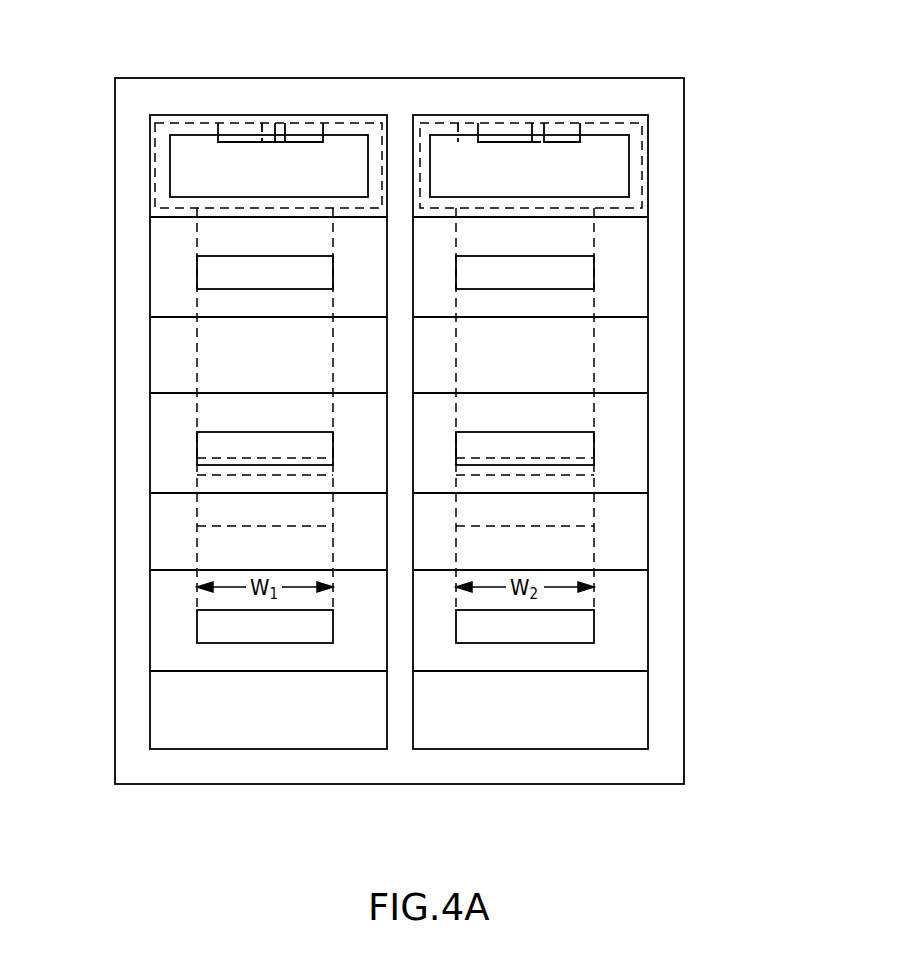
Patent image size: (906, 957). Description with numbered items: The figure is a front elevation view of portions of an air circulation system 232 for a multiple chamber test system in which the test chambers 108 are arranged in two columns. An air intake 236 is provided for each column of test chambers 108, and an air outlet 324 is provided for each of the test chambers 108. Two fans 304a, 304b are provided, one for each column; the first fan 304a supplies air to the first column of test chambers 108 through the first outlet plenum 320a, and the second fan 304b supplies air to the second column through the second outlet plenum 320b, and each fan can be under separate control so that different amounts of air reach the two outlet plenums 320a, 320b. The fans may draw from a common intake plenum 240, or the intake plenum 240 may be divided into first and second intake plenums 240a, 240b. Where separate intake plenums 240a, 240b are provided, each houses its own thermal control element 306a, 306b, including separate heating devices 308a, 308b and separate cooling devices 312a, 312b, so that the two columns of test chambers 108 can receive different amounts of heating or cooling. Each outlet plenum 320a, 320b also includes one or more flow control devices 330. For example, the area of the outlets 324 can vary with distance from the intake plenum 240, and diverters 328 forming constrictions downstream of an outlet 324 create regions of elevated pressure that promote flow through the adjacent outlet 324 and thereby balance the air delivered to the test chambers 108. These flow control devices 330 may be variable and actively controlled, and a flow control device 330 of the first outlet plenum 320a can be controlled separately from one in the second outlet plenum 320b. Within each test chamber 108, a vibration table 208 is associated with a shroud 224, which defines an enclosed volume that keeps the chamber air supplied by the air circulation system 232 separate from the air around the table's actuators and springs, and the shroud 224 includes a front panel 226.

The test chamber 108 is at (148, 242).
The vibration table 208 is at (170, 318).
The shroud 224 is at (133, 386).
The front panel 226 is at (168, 363).
The air circulation system 232 is at (343, 123).
The air intake 236 is at (198, 138).
The intake plenum 240 is at (308, 122).
The first intake plenum 240a is at (262, 122).
The second intake plenum 240b is at (458, 122).
The first fan 304a is at (325, 105).
The second fan 304b is at (531, 105).
The first thermal control element 306a is at (273, 157).
The second thermal control element 306b is at (530, 157).
The first heating device 308a is at (258, 142).
The second heating device 308b is at (517, 142).
The first cooling device 312a is at (296, 142).
The second cooling device 312b is at (557, 142).
The first outlet plenum 320a is at (138, 615).
The second outlet plenum 320b is at (615, 630).
The air outlet 324 is at (207, 279).
The diverter 328 is at (197, 512).
The flow control device 330 is at (198, 284).